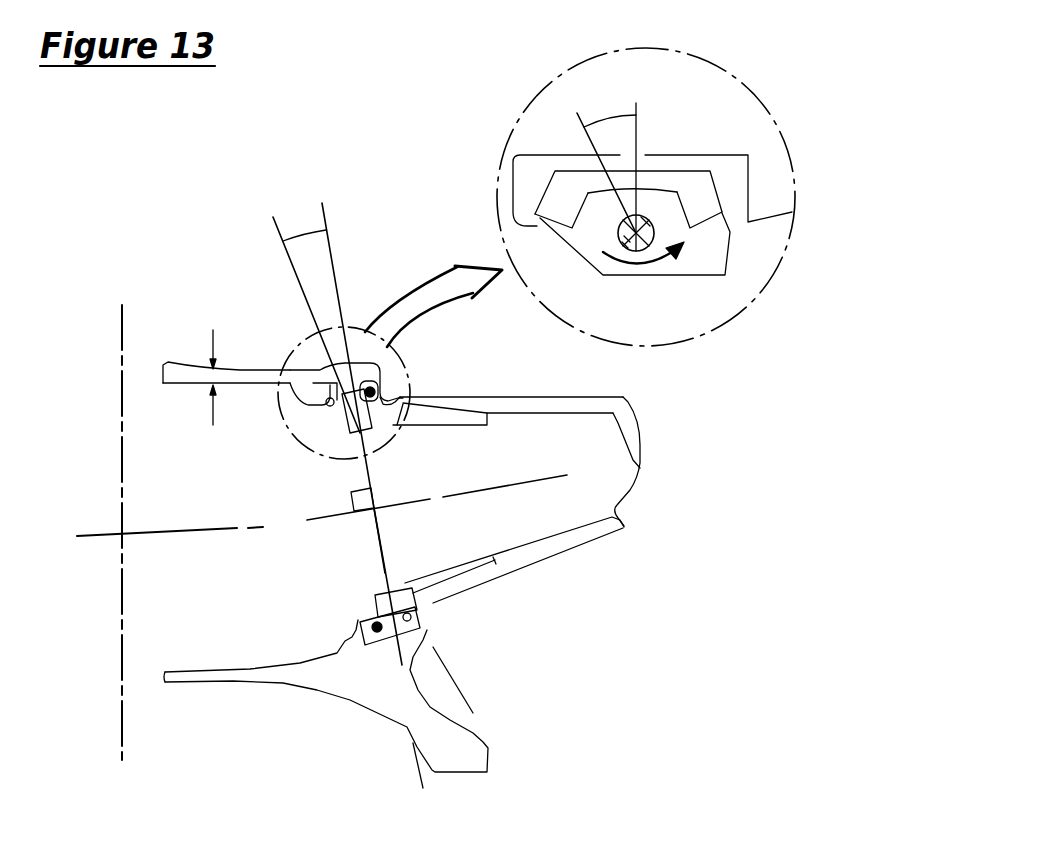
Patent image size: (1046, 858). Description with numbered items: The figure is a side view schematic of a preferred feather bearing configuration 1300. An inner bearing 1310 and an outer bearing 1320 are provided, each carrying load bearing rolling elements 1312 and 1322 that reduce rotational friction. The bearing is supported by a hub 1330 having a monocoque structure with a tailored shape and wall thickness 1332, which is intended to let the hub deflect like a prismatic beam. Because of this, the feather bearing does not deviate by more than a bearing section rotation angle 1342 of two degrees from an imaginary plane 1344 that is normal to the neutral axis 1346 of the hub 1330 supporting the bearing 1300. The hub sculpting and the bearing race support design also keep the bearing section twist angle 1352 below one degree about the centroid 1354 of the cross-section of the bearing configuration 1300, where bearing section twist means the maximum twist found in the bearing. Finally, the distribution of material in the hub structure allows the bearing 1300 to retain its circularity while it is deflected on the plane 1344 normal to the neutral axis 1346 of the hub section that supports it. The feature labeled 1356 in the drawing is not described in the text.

The feather bearing configuration 1300 is at (300, 331).
The inner bearing 1310 is at (537, 241).
The load bearing rolling elements 1312 is at (558, 232).
The outer bearing 1320 is at (726, 233).
The load bearing rolling elements 1322 is at (748, 195).
The hub 1330 is at (230, 680).
The wall thickness 1332 is at (212, 345).
The bearing section rotation angle 1342 is at (284, 238).
The imaginary plane 1344 is at (323, 238).
The neutral axis 1346 is at (401, 505).
The bearing section twist angle 1352 is at (602, 122).
The centroid 1354 is at (640, 228).
The bracket 1356 is at (527, 153).